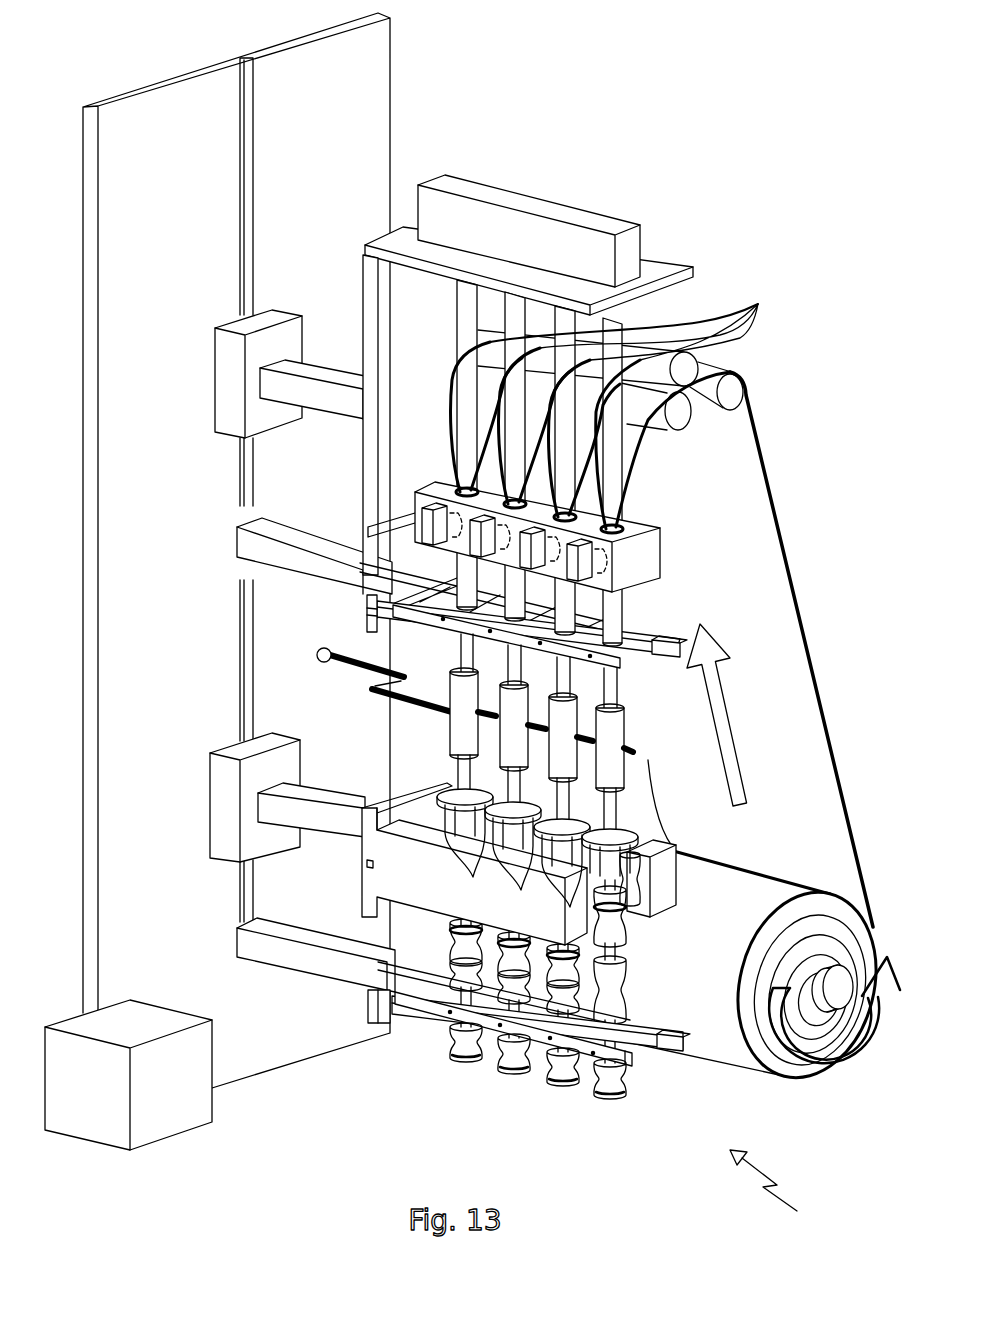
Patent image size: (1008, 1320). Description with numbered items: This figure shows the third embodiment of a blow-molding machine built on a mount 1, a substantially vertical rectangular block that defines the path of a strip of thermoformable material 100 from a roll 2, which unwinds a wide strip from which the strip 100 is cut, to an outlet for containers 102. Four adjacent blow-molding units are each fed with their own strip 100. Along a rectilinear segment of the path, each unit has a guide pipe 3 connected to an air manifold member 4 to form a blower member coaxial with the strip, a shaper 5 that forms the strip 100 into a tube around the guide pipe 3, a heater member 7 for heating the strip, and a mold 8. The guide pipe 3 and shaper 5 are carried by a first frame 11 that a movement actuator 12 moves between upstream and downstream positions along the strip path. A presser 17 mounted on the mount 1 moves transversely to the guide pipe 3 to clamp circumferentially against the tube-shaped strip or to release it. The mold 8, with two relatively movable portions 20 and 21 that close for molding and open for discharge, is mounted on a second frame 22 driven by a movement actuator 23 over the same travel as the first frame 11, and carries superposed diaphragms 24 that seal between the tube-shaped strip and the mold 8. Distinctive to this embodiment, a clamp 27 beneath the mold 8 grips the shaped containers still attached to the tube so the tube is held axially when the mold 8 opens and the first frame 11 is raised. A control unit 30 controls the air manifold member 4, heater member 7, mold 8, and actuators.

The mount 1 is at (118, 128).
The roll 2 is at (790, 1065).
The guide pipe 3 is at (700, 322).
The air manifold member 4 is at (623, 222).
The shaper 5 is at (640, 520).
The heater member 7 is at (470, 752).
The mold 8 is at (390, 853).
The first frame 11 is at (673, 267).
The movement actuator 12 is at (305, 330).
The presser 17 is at (462, 630).
The mold portion 20 is at (627, 977).
The mold portion 21 is at (667, 900).
The second frame 22 is at (373, 897).
The movement actuator 23 is at (296, 757).
The diaphragms 24 is at (473, 877).
The clamp 27 is at (462, 1012).
The control unit 30 is at (178, 1120).
The strip of thermoformable material 100 is at (617, 462).
The containers 102 is at (784, 1197).